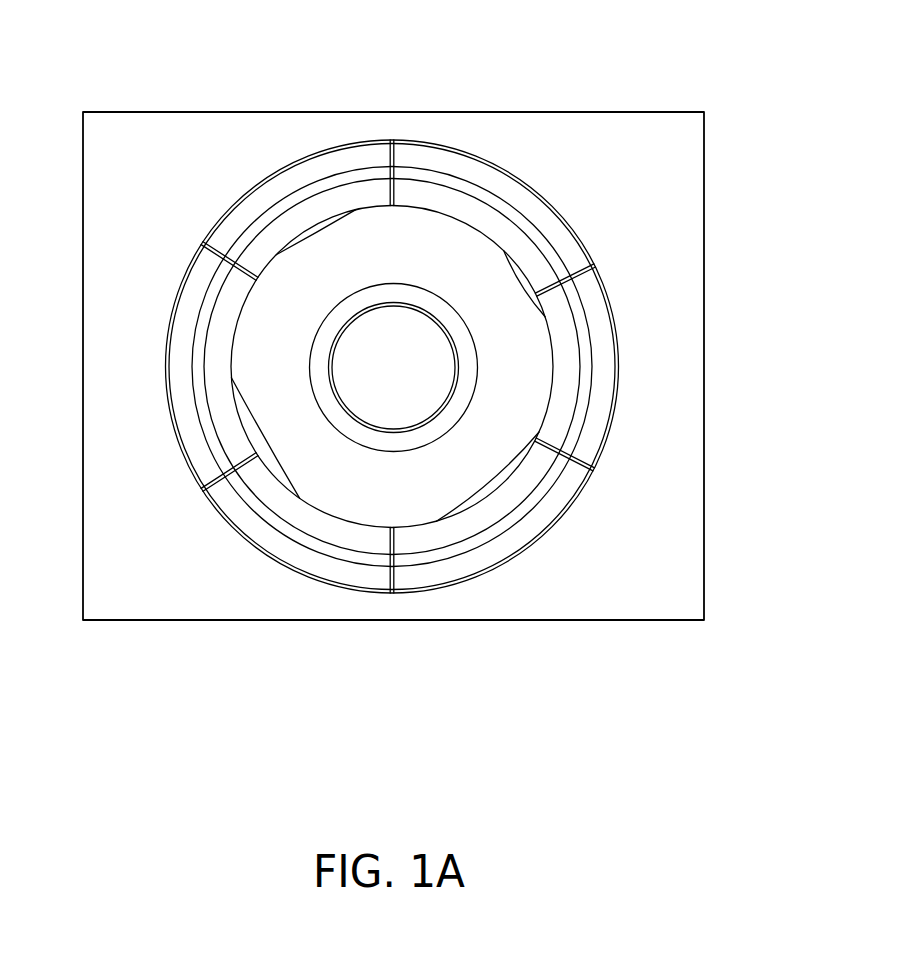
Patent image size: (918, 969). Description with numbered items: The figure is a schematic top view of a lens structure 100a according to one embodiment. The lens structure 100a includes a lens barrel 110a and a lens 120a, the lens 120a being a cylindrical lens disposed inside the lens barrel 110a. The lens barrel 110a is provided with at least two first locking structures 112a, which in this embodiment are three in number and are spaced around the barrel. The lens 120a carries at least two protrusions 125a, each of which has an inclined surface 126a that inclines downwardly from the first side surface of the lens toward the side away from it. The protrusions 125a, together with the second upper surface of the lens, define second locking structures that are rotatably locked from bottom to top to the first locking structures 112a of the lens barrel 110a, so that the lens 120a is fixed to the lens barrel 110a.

The lens structure 100a is at (639, 709).
The lens barrel 110a is at (550, 142).
The first locking structures 112a is at (305, 167).
The lens 120a is at (527, 347).
The protrusions 125a is at (360, 361).
The inclined surface 126a is at (258, 233).